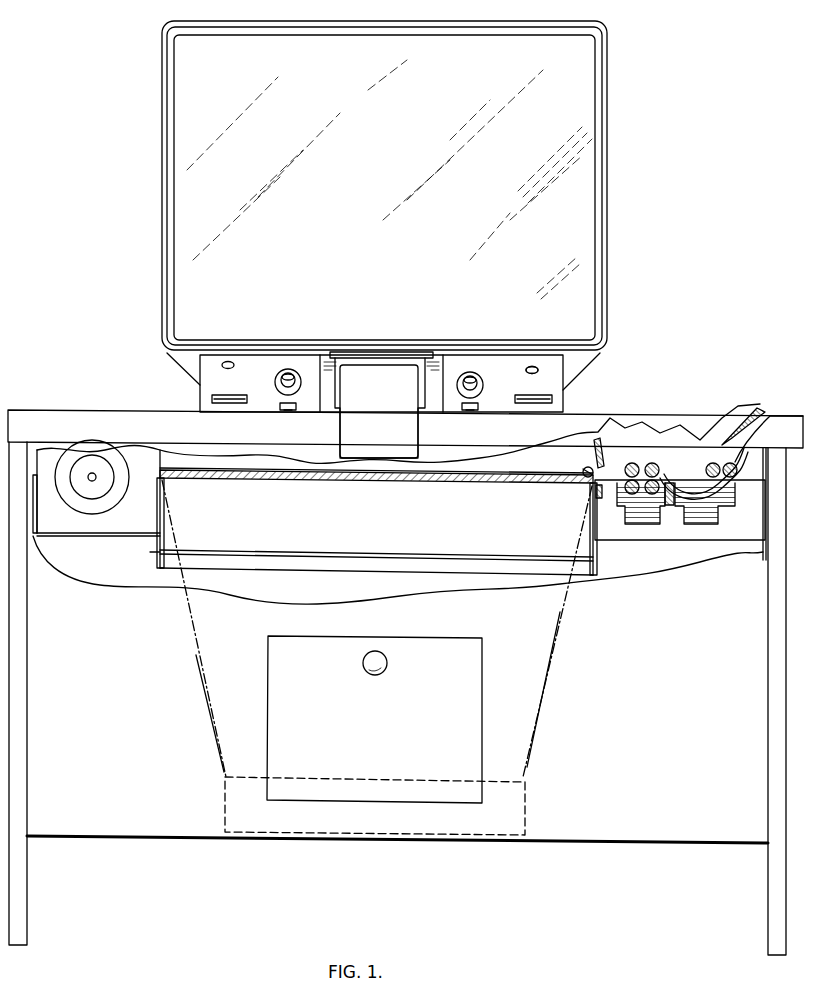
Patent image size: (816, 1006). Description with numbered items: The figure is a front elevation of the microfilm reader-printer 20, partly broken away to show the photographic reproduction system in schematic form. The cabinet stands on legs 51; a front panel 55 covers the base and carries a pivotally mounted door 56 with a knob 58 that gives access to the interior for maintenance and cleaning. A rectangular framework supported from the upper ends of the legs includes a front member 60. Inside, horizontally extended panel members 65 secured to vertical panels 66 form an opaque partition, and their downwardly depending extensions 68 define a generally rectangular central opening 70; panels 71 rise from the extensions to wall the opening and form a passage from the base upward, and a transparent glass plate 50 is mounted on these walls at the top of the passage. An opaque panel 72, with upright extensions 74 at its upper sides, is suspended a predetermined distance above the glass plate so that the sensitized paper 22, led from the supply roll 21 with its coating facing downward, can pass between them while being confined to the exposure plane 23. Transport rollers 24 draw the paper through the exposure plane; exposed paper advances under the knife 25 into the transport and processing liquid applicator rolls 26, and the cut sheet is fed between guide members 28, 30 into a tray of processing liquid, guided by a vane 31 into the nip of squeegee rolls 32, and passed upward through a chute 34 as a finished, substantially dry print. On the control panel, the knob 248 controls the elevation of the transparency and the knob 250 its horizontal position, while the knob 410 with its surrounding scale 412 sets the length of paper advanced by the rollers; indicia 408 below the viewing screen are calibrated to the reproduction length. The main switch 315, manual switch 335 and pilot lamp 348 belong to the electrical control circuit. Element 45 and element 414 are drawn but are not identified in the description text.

The reader-printer 20 is at (692, 318).
The video display screen 45 is at (593, 84).
The indicia 408 is at (197, 338).
The control button 414 is at (289, 369).
The pilot lamp 348 is at (532, 366).
The knob 248 is at (282, 405).
The knob 410 is at (466, 379).
The scale 412 is at (477, 381).
The knob 250 is at (480, 404).
The main switch 315 is at (228, 404).
The manual switch 335 is at (520, 404).
The front member 60 is at (36, 412).
The supply roll 21 is at (96, 468).
The paper 22 is at (144, 478).
The exposure plane 23 is at (397, 480).
The opaque panel 72 is at (497, 472).
The upright extensions 74 is at (588, 466).
The transparent glass plate 50 is at (297, 480).
The panels 71 is at (164, 514).
The downwardly depending extensions 68 is at (157, 552).
The vertical panels 66 is at (399, 522).
The horizontally extended panel members 65 is at (89, 570).
The central opening 70 is at (494, 537).
The knob 58 is at (386, 655).
The door 56 is at (474, 700).
The panel 55 is at (610, 836).
The legs 51 is at (27, 904).
The transport rollers 24 is at (601, 438).
The knife 25 is at (636, 462).
The transport and processing liquid applicator rolls 26 is at (656, 462).
The guide member 30 is at (692, 478).
The chute 34 is at (740, 430).
The squeegee rolls 32 is at (680, 510).
The guide member 28 is at (656, 512).
The vane 31 is at (696, 512).